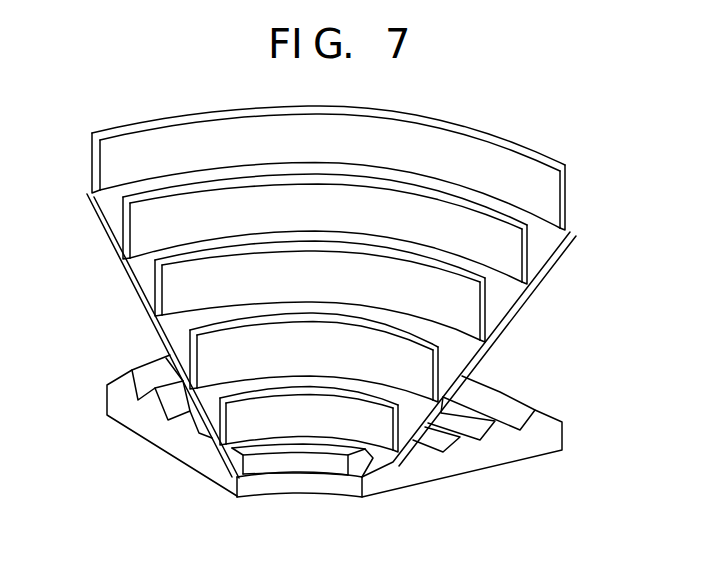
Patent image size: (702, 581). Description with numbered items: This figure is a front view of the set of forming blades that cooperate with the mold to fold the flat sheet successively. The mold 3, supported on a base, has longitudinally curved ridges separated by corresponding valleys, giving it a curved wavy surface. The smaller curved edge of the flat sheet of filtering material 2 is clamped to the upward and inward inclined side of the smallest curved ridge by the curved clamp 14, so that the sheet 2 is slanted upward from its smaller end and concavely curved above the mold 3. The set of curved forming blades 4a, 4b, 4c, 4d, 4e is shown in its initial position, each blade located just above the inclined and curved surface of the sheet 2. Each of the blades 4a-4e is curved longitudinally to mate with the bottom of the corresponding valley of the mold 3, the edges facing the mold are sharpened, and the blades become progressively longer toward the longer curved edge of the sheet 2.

The flat sheet of filtering material 2 is at (537, 250).
The mold 3 is at (480, 460).
The curved forming blade 4a is at (223, 430).
The curved forming blade 4b is at (190, 349).
The curved forming blade 4c is at (157, 292).
The curved forming blade 4d is at (123, 219).
The curved forming blade 4e is at (543, 195).
The curved clamp 14 is at (313, 463).